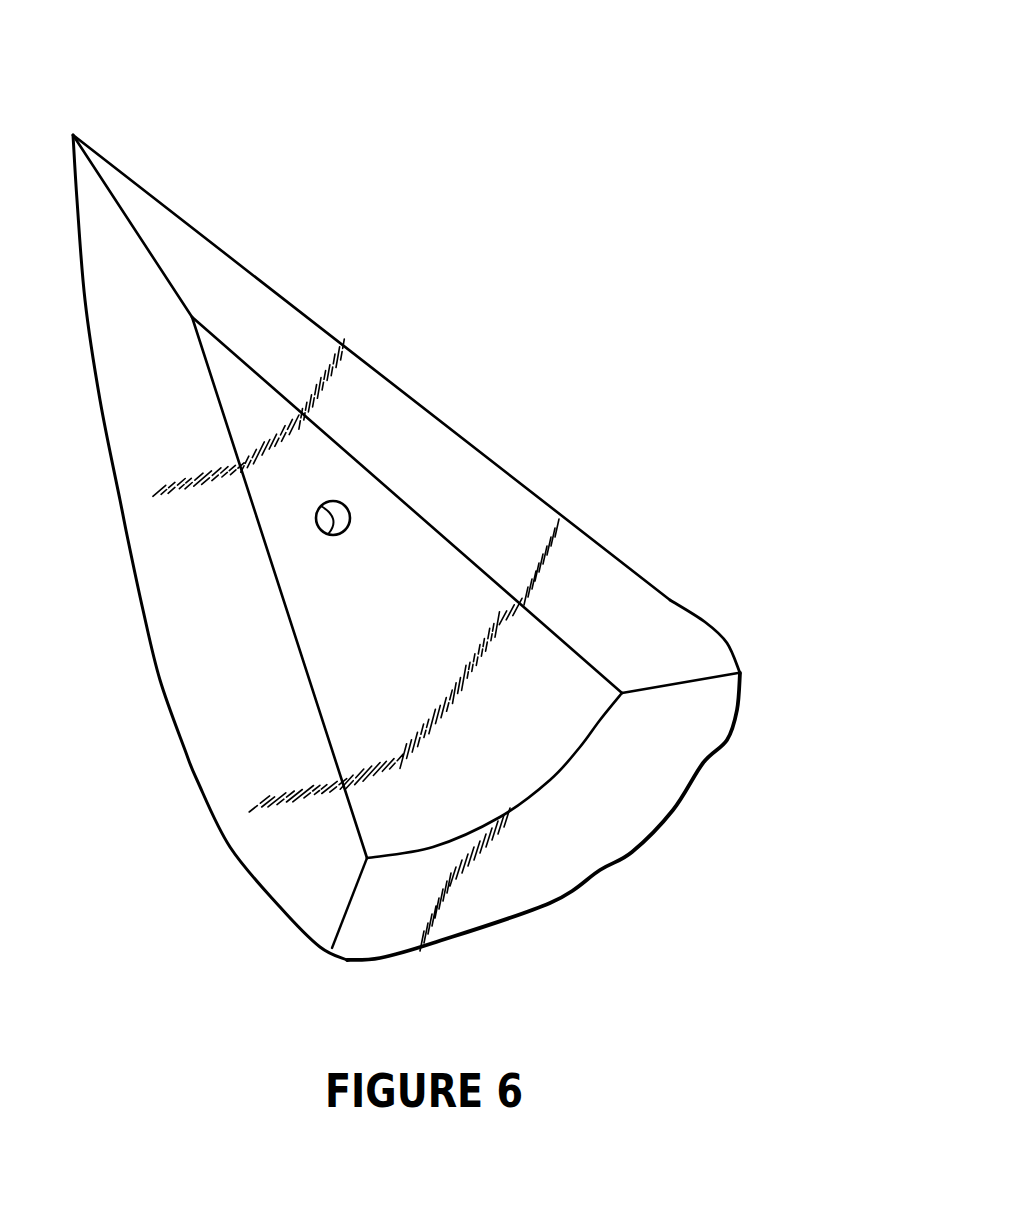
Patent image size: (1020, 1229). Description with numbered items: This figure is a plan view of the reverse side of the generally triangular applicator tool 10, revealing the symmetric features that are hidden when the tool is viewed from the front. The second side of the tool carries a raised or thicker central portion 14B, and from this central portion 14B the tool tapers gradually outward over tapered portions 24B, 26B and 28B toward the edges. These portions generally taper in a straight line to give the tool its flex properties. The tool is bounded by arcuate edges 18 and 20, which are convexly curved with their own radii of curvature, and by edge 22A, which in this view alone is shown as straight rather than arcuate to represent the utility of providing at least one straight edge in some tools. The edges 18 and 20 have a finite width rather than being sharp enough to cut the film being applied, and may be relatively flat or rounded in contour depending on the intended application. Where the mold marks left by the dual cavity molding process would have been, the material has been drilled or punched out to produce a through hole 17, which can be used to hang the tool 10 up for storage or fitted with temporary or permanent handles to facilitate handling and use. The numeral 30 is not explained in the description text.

The applicator tool 10 is at (660, 173).
The tip 30 is at (73, 135).
The through hole 17 is at (351, 518).
The straight edge 22A is at (622, 558).
The tapered portion 26B is at (670, 628).
The raised central portion 14B is at (298, 550).
The tapered portion 28B is at (188, 662).
The arcuate edge 20 is at (190, 768).
The tapered portion 24B is at (675, 761).
The arcuate edge 18 is at (632, 852).